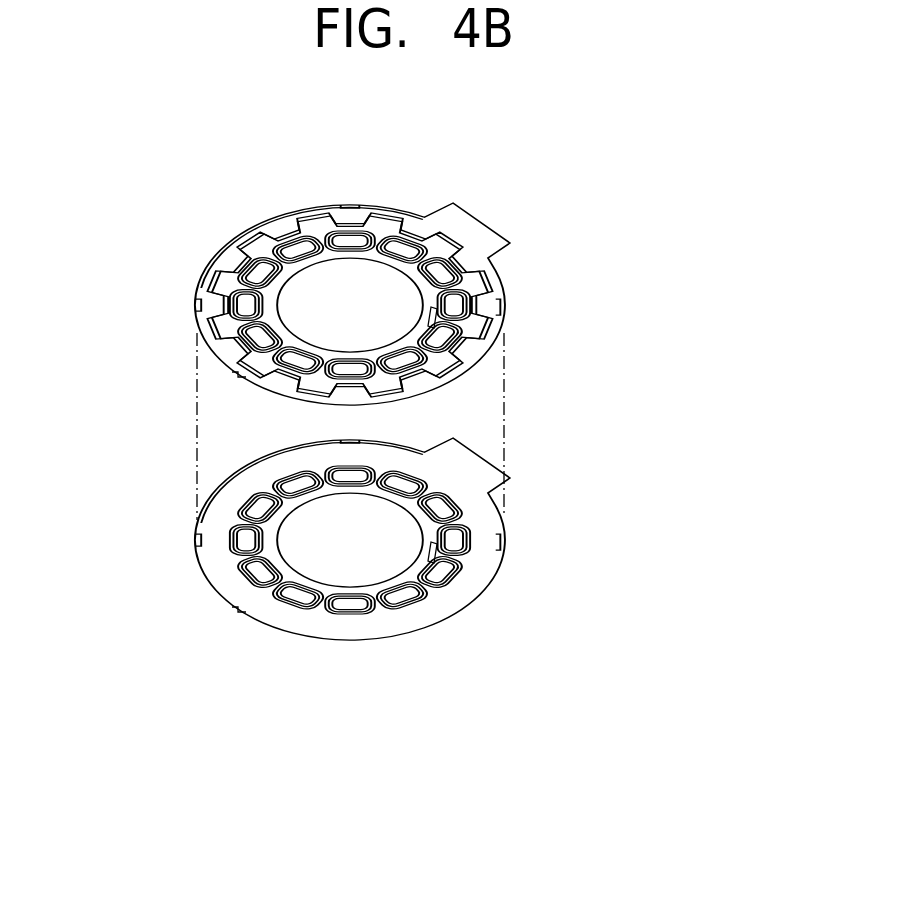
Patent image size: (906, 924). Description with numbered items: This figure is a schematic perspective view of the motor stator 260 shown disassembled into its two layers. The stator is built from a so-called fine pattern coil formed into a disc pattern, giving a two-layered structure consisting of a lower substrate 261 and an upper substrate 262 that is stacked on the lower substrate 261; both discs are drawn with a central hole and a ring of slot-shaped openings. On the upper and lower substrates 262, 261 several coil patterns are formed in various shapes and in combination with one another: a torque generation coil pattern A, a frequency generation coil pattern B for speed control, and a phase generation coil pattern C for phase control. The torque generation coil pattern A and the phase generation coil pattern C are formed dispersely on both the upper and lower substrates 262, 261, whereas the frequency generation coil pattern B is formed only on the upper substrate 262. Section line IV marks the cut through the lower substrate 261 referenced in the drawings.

The friction plate assembly 260 is at (207, 195).
The lower substrate 261 is at (208, 512).
The upper substrate 262 is at (203, 291).
The torque generation coil pattern A is at (468, 311).
The frequency generation coil pattern B is at (500, 315).
The phase generation coil pattern C is at (440, 291).
The section line IV is at (287, 553).